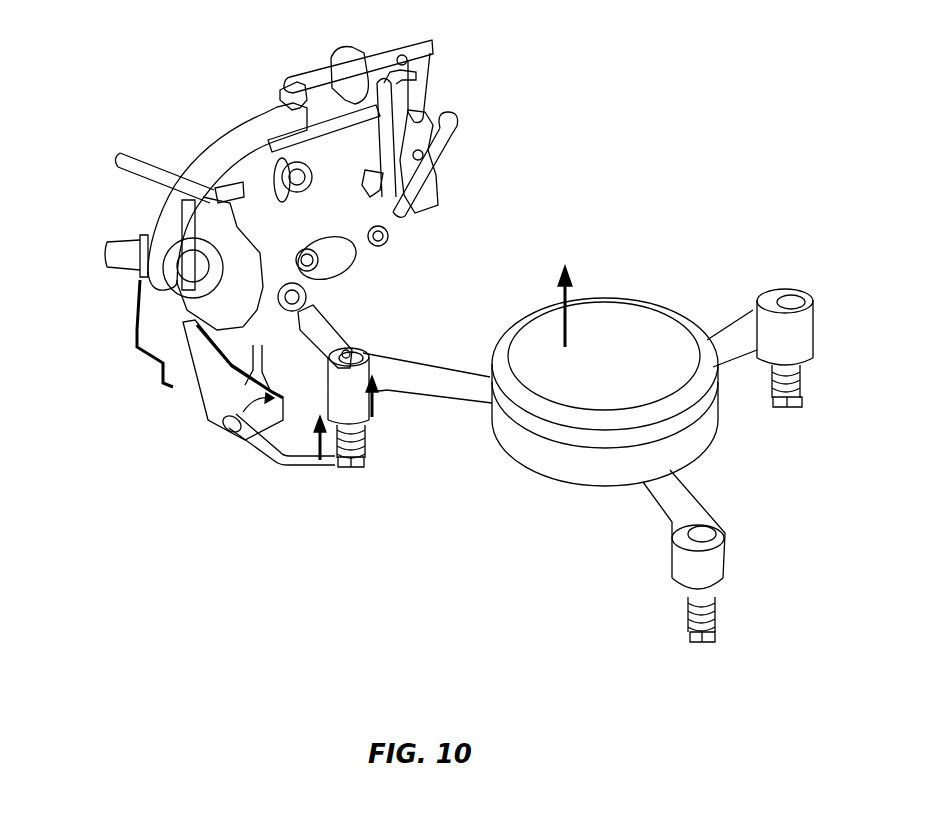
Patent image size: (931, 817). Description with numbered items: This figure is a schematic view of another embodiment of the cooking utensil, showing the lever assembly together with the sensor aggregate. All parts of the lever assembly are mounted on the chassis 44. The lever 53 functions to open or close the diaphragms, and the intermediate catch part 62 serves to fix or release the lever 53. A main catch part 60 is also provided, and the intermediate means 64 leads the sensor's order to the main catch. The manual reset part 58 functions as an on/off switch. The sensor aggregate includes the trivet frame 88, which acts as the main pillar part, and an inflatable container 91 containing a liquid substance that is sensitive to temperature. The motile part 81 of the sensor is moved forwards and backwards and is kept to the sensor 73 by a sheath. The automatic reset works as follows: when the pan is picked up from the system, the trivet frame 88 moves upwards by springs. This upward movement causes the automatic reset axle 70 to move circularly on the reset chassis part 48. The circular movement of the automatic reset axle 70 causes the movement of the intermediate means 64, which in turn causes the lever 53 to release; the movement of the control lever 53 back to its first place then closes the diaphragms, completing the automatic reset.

The chassis 44 is at (228, 147).
The lever 53 is at (137, 162).
The intermediate catch part 62 is at (307, 153).
The manual reset part 58 is at (386, 128).
The main catch part 60 is at (440, 147).
The motile part of the sensor 81 is at (210, 269).
The sensor 73 is at (222, 300).
The intermediate means 64 is at (332, 255).
The reset chassis part 48 is at (201, 393).
The automatic reset axle 70 is at (280, 458).
The trivet frame of sensor 88 is at (503, 410).
The inflatable container 91 is at (598, 333).